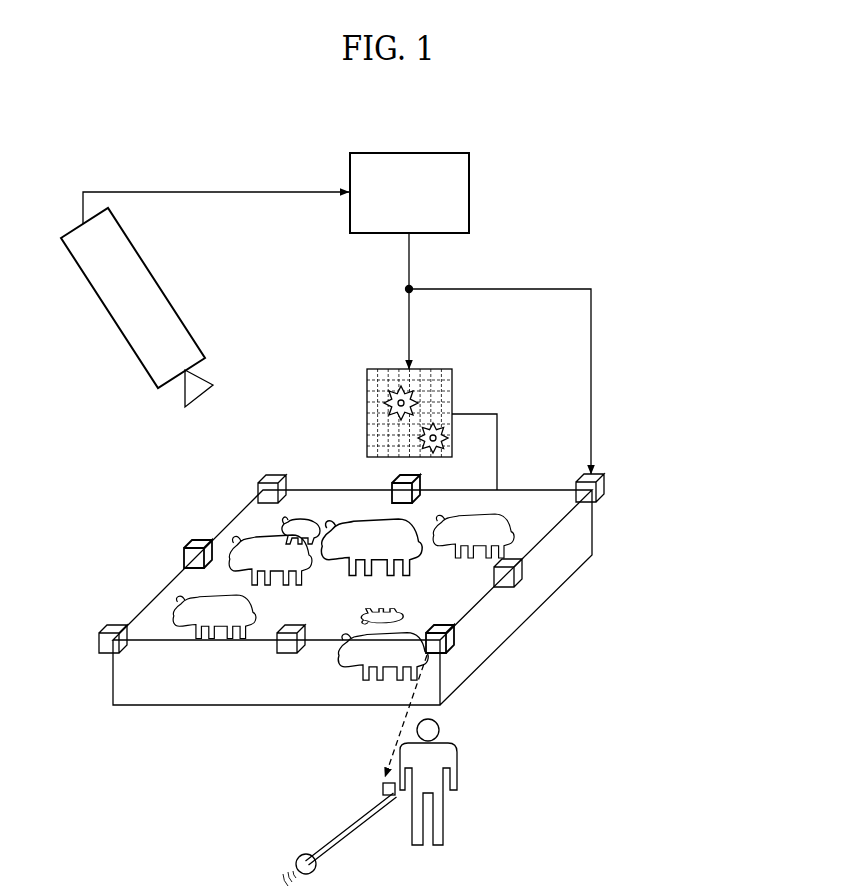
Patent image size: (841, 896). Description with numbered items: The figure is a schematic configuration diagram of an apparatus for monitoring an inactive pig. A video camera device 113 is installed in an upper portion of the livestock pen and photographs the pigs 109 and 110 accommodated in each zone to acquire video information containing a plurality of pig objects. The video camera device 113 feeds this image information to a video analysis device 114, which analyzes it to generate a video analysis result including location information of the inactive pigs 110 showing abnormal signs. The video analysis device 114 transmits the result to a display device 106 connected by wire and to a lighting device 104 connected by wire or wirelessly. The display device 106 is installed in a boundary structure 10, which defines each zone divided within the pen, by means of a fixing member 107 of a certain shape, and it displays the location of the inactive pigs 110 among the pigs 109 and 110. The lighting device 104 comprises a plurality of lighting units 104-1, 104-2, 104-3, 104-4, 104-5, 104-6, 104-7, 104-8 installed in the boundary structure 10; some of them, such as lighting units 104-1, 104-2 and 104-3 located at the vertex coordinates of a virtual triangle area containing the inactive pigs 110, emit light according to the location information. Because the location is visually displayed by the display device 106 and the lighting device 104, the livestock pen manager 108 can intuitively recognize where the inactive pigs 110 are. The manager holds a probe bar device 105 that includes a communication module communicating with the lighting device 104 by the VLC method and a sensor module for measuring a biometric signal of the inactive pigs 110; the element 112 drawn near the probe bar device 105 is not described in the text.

The boundary structure 10 is at (113, 690).
The lighting device 104 is at (422, 585).
The lighting unit 104-1 is at (393, 480).
The lighting unit 104-2 is at (187, 548).
The lighting unit 104-3 is at (450, 650).
The lighting unit 104-4 is at (603, 480).
The lighting unit 104-5 is at (517, 583).
The lighting unit 104-6 is at (285, 653).
The lighting unit 104-7 is at (118, 630).
The lighting unit 104-8 is at (270, 475).
The probe bar device 105 is at (335, 820).
The display device 106 is at (425, 369).
The fixing member 107 is at (475, 413).
The livestock pen manager 108 is at (457, 768).
The pig 109 is at (252, 557).
The inactive pig 110 is at (307, 520).
The marker 112 is at (393, 755).
The video camera device 113 is at (120, 332).
The video analysis device 114 is at (470, 190).